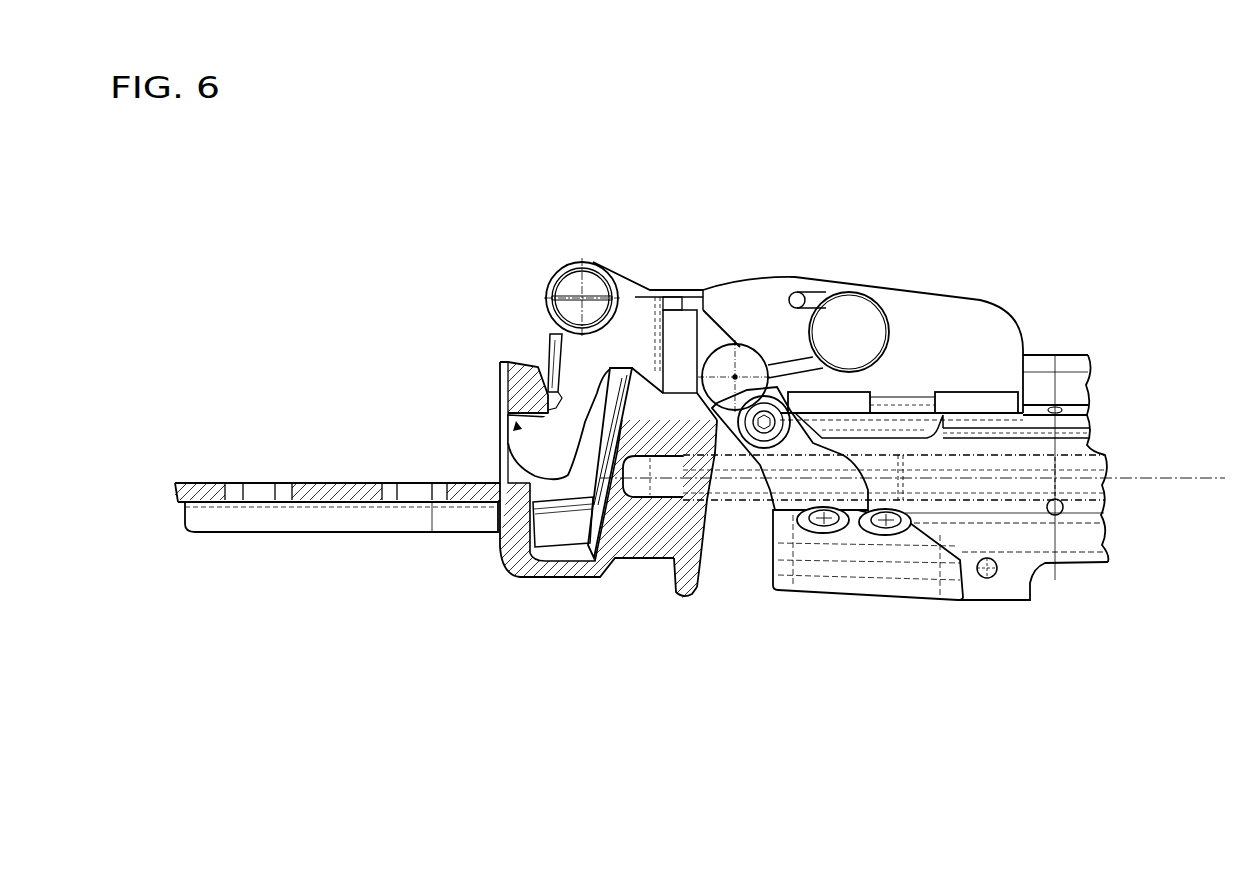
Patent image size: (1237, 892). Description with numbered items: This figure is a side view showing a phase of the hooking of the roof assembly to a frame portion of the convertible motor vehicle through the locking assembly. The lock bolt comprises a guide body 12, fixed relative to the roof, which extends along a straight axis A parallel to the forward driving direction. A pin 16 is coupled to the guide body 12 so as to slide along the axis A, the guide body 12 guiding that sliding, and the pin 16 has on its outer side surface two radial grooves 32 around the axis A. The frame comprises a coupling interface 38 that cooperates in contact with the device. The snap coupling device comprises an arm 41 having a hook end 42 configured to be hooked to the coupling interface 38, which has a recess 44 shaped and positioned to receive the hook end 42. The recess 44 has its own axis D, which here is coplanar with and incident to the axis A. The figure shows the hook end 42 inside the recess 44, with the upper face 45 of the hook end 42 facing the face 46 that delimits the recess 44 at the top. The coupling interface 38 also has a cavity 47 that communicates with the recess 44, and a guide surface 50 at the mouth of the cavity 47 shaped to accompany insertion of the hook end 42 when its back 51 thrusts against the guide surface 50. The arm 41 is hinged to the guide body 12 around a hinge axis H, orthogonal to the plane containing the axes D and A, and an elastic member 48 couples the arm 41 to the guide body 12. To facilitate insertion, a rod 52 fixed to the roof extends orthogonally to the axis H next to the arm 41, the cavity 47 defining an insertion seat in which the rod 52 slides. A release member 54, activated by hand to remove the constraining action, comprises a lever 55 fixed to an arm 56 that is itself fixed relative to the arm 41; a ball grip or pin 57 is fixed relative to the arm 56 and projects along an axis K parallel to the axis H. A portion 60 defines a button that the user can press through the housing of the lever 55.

The guide body 12 is at (1070, 383).
The pin 16 is at (730, 493).
The radial grooves 32 is at (1047, 450).
The coupling interface 38 is at (692, 575).
The arm 41 is at (603, 505).
The hook end 42 is at (500, 547).
The recess 44 is at (510, 487).
The face 45 is at (533, 410).
The face 46 is at (510, 420).
The cavity 47 is at (543, 563).
The elastic member 48 is at (813, 302).
The guide surface 50 is at (547, 370).
The back 51 is at (410, 488).
The rod 52 is at (570, 540).
The release member 54 is at (793, 563).
The lever 55 is at (820, 521).
The arm 56 is at (633, 313).
The ball grip or pin 57 is at (745, 353).
The portion 60 is at (923, 597).
The hinge axis H is at (548, 282).
The axis K is at (760, 370).
The axis D is at (595, 465).
The axis A is at (1173, 480).